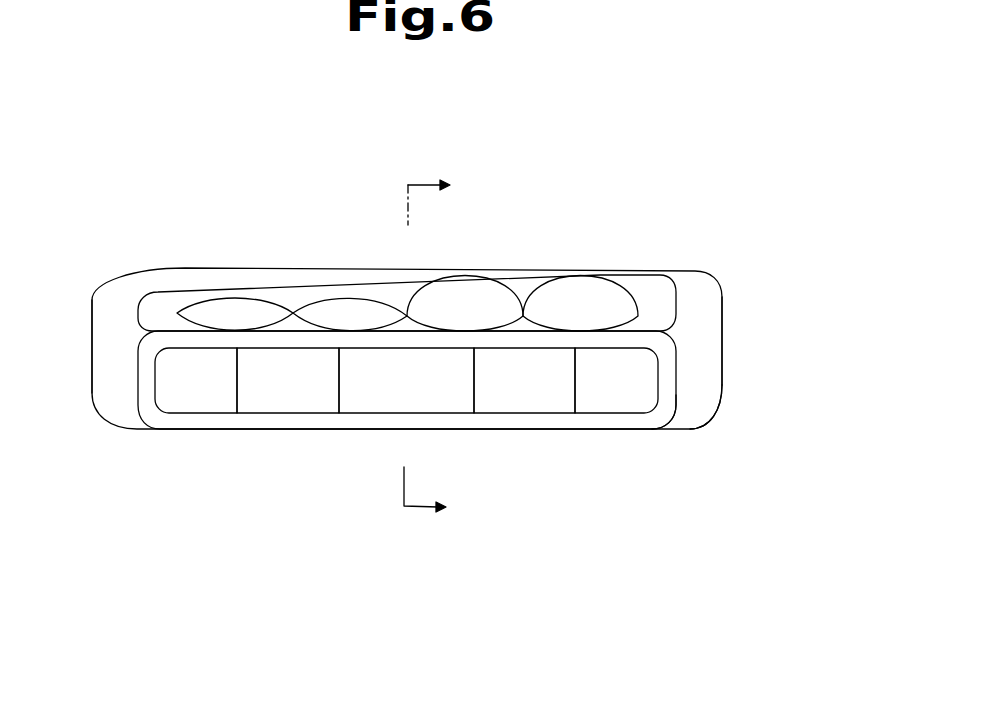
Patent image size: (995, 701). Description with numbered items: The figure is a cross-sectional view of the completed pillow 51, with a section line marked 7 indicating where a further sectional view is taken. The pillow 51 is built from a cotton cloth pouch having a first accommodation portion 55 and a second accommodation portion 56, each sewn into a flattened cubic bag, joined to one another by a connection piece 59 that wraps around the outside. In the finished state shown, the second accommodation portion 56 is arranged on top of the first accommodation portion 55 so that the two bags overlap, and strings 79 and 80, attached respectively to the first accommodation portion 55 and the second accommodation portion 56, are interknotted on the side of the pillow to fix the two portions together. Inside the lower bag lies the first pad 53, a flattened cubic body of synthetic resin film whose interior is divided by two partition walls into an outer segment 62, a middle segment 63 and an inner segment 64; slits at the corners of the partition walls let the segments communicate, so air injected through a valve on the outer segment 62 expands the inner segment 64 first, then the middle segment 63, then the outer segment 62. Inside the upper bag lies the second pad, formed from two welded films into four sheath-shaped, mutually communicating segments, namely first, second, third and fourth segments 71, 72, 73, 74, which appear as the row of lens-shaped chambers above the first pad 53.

The pillow 51 is at (192, 252).
The first pad 53 is at (178, 413).
The first accommodation portion 55 is at (676, 405).
The second accommodation portion 56 is at (678, 302).
The connection piece 59 is at (90, 350).
The outer segment 62 is at (218, 402).
The middle segment 63 is at (320, 402).
The inner segment 64 is at (452, 402).
The first segment 71 is at (213, 317).
The second segment 72 is at (328, 317).
The third segment 73 is at (443, 318).
The fourth segment 74 is at (557, 318).
The string 79 is at (723, 333).
The string 80 is at (723, 333).
The section line for FIG. 7 is at (443, 349).